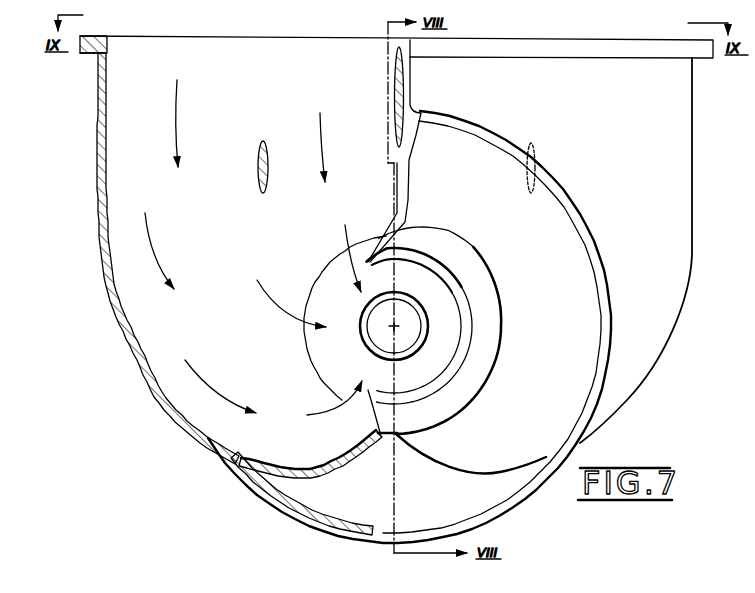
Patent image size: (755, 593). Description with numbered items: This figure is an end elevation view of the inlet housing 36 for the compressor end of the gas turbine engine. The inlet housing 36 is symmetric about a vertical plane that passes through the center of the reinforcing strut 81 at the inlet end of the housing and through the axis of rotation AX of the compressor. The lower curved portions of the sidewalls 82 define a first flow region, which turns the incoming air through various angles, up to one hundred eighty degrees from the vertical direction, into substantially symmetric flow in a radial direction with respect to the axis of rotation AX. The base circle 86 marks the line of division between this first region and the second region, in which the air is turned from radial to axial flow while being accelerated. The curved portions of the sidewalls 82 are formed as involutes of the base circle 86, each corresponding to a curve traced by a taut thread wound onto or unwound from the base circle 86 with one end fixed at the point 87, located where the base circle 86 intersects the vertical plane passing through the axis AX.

The inlet housing 36 is at (88, 36).
The reinforcing strut 81 is at (404, 78).
The sidewalls 82 is at (127, 323).
The base circle 86 is at (322, 268).
The involute origin point 87 is at (397, 240).
The axis of rotation AX is at (393, 327).